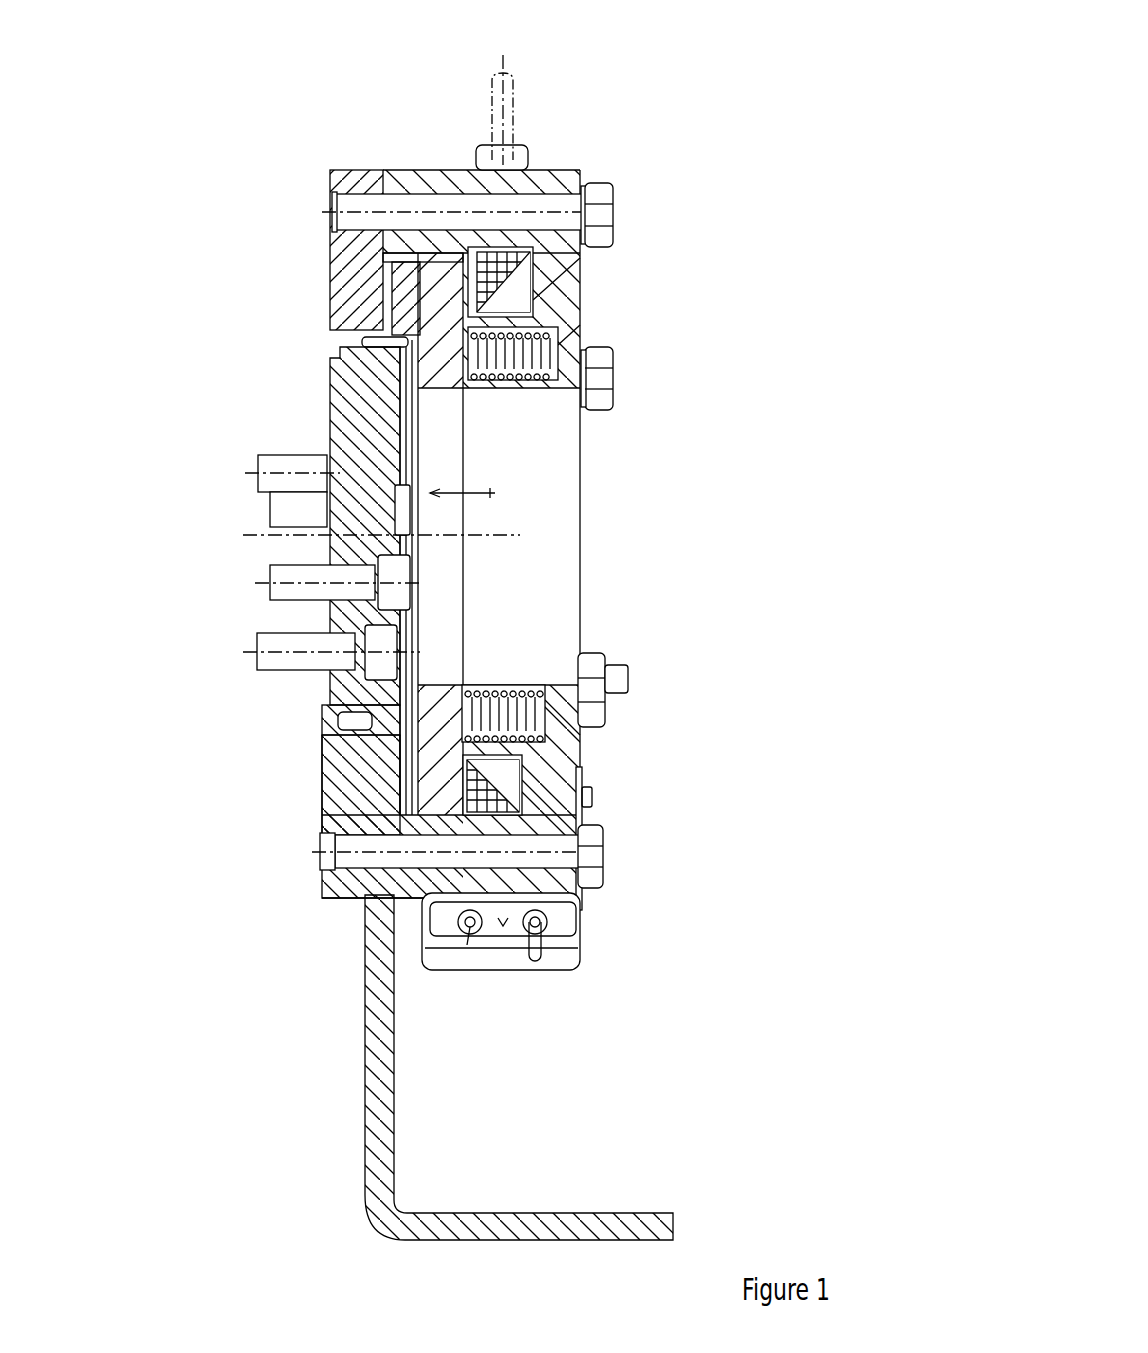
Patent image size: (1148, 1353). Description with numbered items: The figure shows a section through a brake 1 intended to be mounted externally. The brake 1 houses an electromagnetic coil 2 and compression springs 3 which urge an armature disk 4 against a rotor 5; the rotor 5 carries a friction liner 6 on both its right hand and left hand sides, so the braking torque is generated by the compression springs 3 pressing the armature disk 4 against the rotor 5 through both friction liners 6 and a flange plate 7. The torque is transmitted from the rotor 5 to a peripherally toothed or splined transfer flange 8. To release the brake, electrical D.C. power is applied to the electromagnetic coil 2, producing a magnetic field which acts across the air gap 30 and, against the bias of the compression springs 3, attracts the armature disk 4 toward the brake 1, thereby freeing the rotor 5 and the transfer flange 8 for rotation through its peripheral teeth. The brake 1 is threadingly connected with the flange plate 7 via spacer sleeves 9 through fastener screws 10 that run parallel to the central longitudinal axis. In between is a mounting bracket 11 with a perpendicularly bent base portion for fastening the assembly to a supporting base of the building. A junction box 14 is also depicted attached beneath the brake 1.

The brake 1 is at (537, 540).
The electromagnetic coil 2 is at (606, 473).
The compression springs 3 is at (606, 534).
The armature disk 4 is at (574, 534).
The rotor 5 is at (393, 882).
The friction liner 6 is at (291, 722).
The flange plate 7 is at (323, 816).
The transfer flange 8 is at (355, 521).
The spacer sleeves 9 is at (377, 176).
The fastener screws 10 is at (486, 127).
The mounting bracket 11 is at (555, 1067).
The junction box 14 is at (587, 931).
The air gap 30 is at (598, 560).